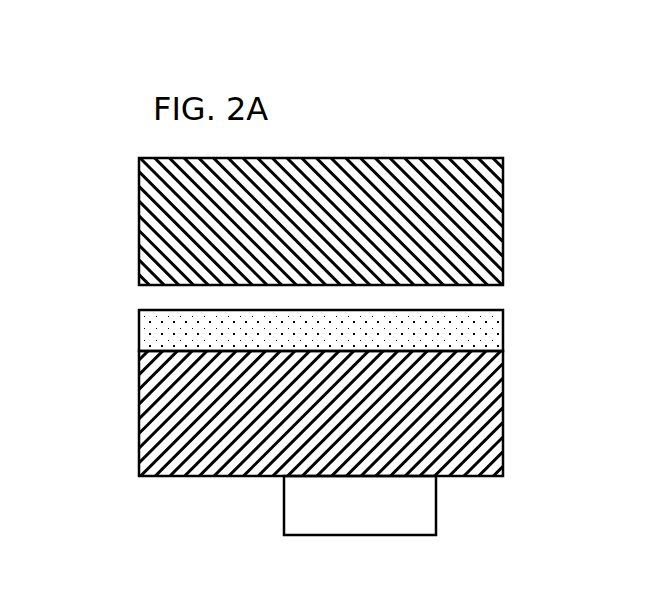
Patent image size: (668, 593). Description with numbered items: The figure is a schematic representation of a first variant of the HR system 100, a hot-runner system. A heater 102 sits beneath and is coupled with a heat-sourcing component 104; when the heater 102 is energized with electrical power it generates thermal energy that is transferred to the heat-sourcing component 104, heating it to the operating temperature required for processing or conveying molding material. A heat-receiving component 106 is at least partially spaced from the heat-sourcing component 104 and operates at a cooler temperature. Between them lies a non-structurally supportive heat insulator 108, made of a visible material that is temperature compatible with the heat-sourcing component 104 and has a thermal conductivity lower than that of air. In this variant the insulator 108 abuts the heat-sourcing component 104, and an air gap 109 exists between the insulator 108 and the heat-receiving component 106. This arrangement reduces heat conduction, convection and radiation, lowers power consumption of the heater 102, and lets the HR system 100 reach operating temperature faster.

The HR system 100 is at (407, 121).
The heater 102 is at (387, 517).
The heat-sourcing component 104 is at (503, 413).
The heat-receiving component 106 is at (503, 220).
The non-structurally supportive heat insulator 108 is at (503, 331).
The air gap 109 is at (498, 296).